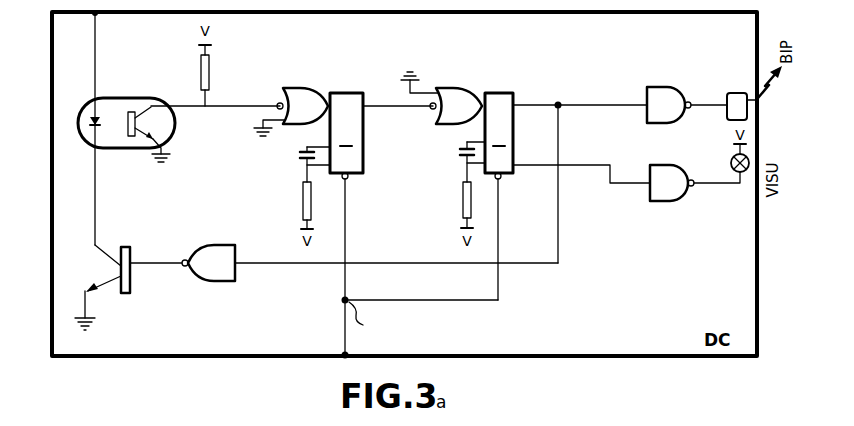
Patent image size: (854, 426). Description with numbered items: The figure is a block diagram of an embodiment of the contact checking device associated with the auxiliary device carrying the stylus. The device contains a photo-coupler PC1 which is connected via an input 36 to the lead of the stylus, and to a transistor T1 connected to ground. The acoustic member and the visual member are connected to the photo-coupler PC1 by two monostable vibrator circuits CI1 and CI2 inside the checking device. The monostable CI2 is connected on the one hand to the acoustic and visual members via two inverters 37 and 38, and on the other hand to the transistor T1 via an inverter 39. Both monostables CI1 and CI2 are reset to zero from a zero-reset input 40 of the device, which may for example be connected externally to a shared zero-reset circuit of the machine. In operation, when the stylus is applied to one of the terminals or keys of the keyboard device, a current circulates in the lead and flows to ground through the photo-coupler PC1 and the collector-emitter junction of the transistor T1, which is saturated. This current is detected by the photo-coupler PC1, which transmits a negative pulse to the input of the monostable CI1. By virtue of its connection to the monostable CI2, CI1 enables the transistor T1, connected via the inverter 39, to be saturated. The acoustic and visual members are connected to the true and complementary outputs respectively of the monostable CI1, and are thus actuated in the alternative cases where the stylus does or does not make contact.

The input 36 is at (97, 15).
The inverter 37 is at (669, 88).
The inverter 38 is at (672, 196).
The inverter 39 is at (212, 277).
The RAZ input 40 is at (343, 352).
The photo-coupler PC1 is at (112, 104).
The transistor T1 is at (102, 287).
The monostable vibrator circuit CI1 is at (356, 128).
The monostable vibrator circuit CI2 is at (508, 134).